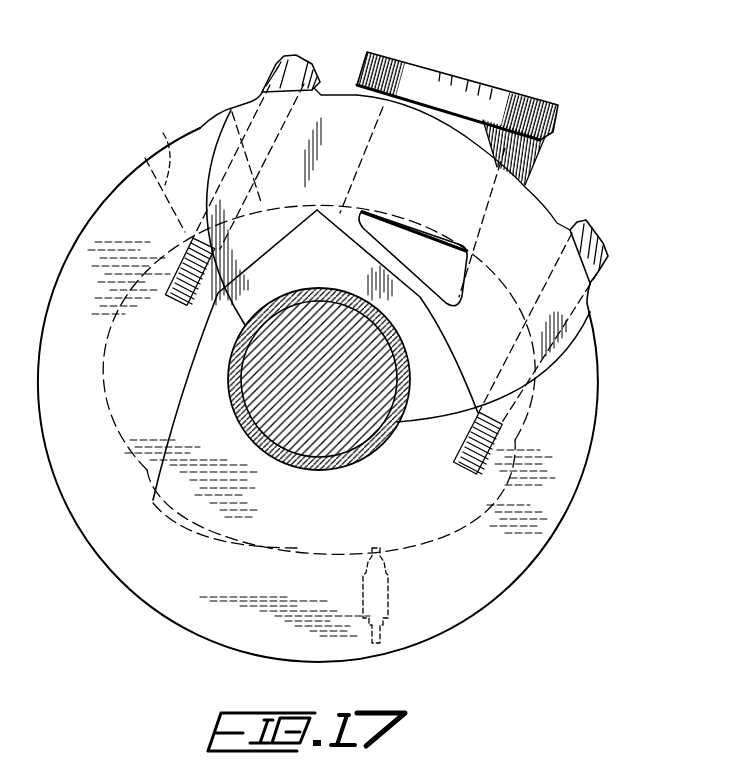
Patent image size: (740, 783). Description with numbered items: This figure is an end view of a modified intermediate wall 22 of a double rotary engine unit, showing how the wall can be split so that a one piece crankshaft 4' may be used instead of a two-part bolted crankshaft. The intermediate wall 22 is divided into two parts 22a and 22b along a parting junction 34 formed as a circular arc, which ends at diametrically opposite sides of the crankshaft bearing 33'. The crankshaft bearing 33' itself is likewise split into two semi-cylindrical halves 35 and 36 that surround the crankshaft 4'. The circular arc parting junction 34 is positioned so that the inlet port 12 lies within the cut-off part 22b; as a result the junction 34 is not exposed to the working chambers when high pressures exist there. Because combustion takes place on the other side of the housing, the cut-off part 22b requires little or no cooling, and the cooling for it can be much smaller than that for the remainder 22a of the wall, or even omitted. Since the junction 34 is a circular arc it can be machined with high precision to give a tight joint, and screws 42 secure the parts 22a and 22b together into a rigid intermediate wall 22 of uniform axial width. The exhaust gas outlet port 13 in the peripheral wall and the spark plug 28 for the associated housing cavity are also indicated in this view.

The intermediate wall 22 is at (112, 187).
The remainder of the intermediate wall 22a is at (258, 606).
The cut-off part of the intermediate wall 22b is at (573, 319).
The outlet port 13 is at (164, 136).
The parting junction 34 is at (218, 126).
The screws 42 is at (272, 87).
The inlet port 12 is at (433, 240).
The one piece crankshaft 4' is at (335, 379).
The bearing half 35 is at (244, 331).
The bearing half 36 is at (397, 421).
The crankshaft bearing 33' is at (320, 391).
The spark plug 28 is at (388, 597).